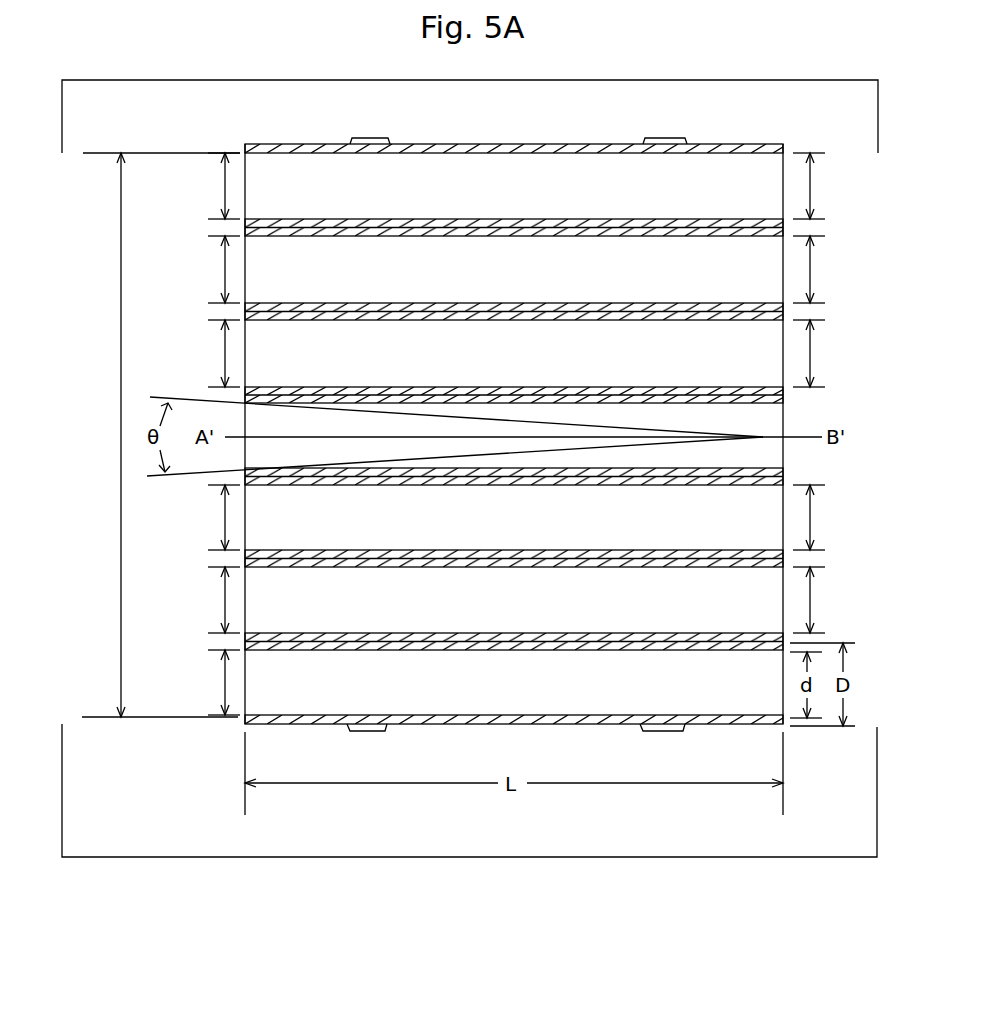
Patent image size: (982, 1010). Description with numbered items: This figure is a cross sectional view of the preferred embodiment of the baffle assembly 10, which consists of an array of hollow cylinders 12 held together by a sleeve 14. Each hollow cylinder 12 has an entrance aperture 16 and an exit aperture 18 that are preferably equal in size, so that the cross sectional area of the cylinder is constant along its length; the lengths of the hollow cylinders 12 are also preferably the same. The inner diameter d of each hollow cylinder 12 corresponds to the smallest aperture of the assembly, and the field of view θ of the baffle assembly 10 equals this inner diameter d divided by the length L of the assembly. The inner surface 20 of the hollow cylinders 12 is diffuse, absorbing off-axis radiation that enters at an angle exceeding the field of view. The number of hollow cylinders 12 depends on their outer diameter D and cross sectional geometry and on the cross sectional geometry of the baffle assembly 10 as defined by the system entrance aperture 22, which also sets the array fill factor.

The baffle assembly 10 is at (533, 858).
The hollow cylinders 12 is at (327, 228).
The sleeve 14 is at (392, 140).
The entrance aperture 16 is at (224, 187).
The exit aperture 18 is at (812, 187).
The inner surface 20 is at (488, 155).
The system entrance aperture 22 is at (120, 510).